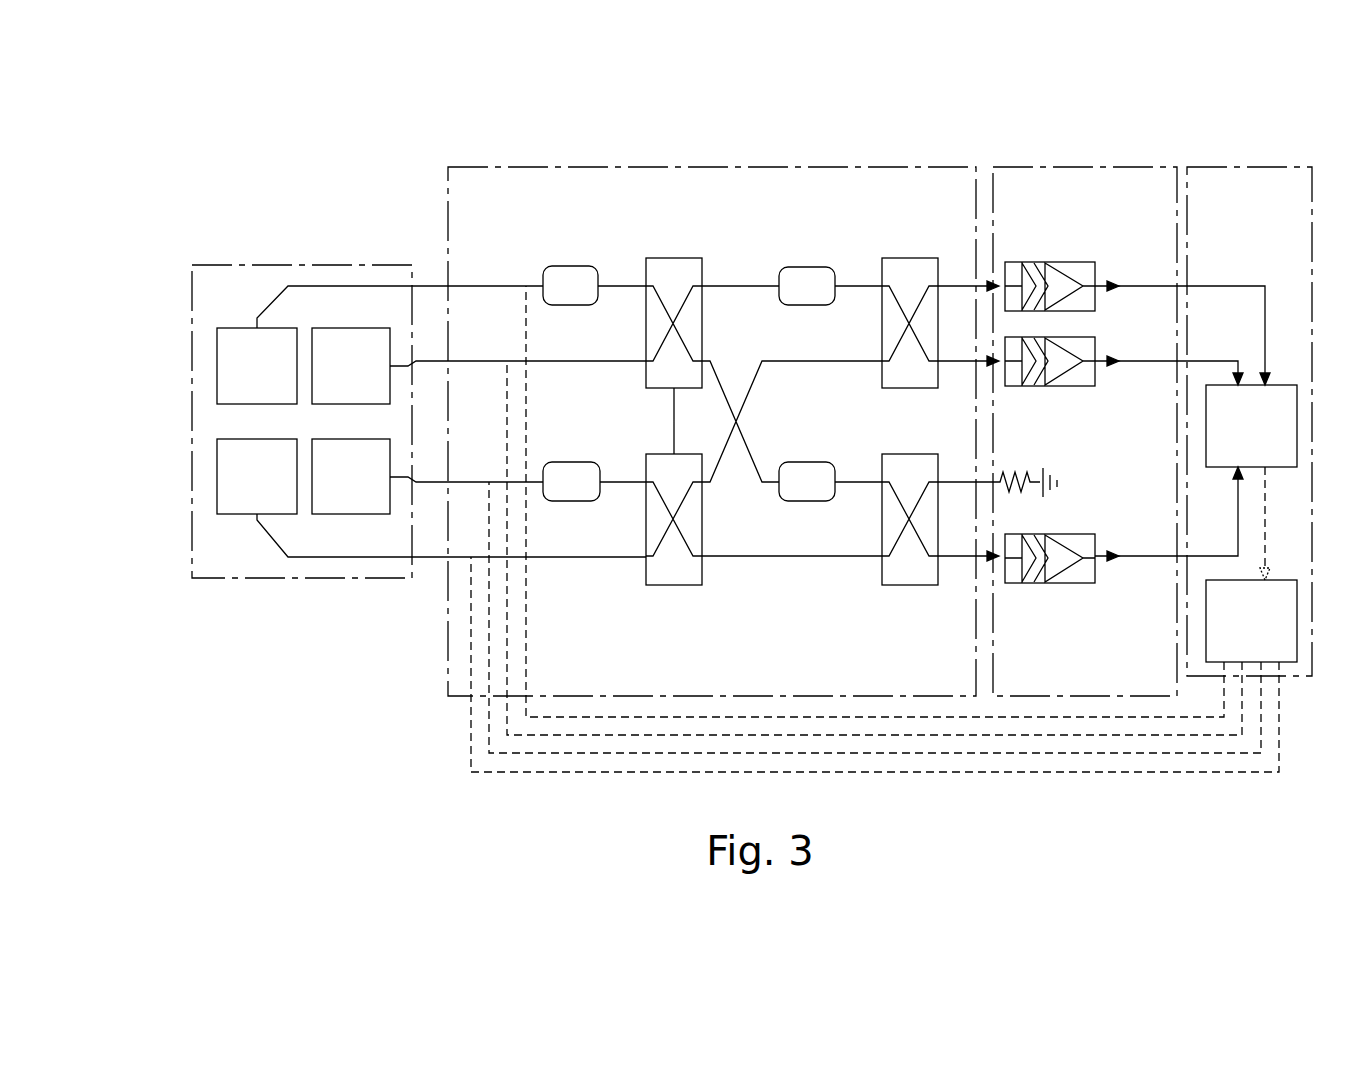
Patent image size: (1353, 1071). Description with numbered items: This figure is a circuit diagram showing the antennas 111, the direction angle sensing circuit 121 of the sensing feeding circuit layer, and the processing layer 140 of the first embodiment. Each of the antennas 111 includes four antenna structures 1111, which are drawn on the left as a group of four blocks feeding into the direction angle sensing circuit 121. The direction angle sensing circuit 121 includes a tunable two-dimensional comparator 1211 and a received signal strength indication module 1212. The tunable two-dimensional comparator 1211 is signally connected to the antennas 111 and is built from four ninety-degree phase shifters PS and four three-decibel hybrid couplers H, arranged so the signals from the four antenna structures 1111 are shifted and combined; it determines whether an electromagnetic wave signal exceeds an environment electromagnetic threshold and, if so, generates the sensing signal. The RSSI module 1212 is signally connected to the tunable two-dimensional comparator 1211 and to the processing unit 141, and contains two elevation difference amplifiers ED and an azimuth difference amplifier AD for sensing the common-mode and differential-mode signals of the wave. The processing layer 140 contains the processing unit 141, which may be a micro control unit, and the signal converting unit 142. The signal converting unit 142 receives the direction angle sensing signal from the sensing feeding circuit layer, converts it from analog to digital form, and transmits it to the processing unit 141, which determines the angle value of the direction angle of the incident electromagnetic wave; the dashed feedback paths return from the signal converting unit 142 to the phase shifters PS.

The antennas 111 is at (302, 383).
The antenna structures 1111 is at (303, 421).
The direction angle sensing circuit 121 is at (1040, 73).
The tunable 2D comparator 1211 is at (630, 165).
The received signal strength indication (RSSI) module 1212 is at (1058, 165).
The processing layer 140 is at (1240, 165).
The processing unit 141 is at (1251, 426).
The signal converting unit 142 is at (1251, 621).
The 90-degree phase shifter PS is at (570, 462).
The 3 dB hybrid coupler H is at (674, 585).
The elevation difference amplifier ED is at (1080, 262).
The Azimuth difference amplifier AD is at (1080, 582).